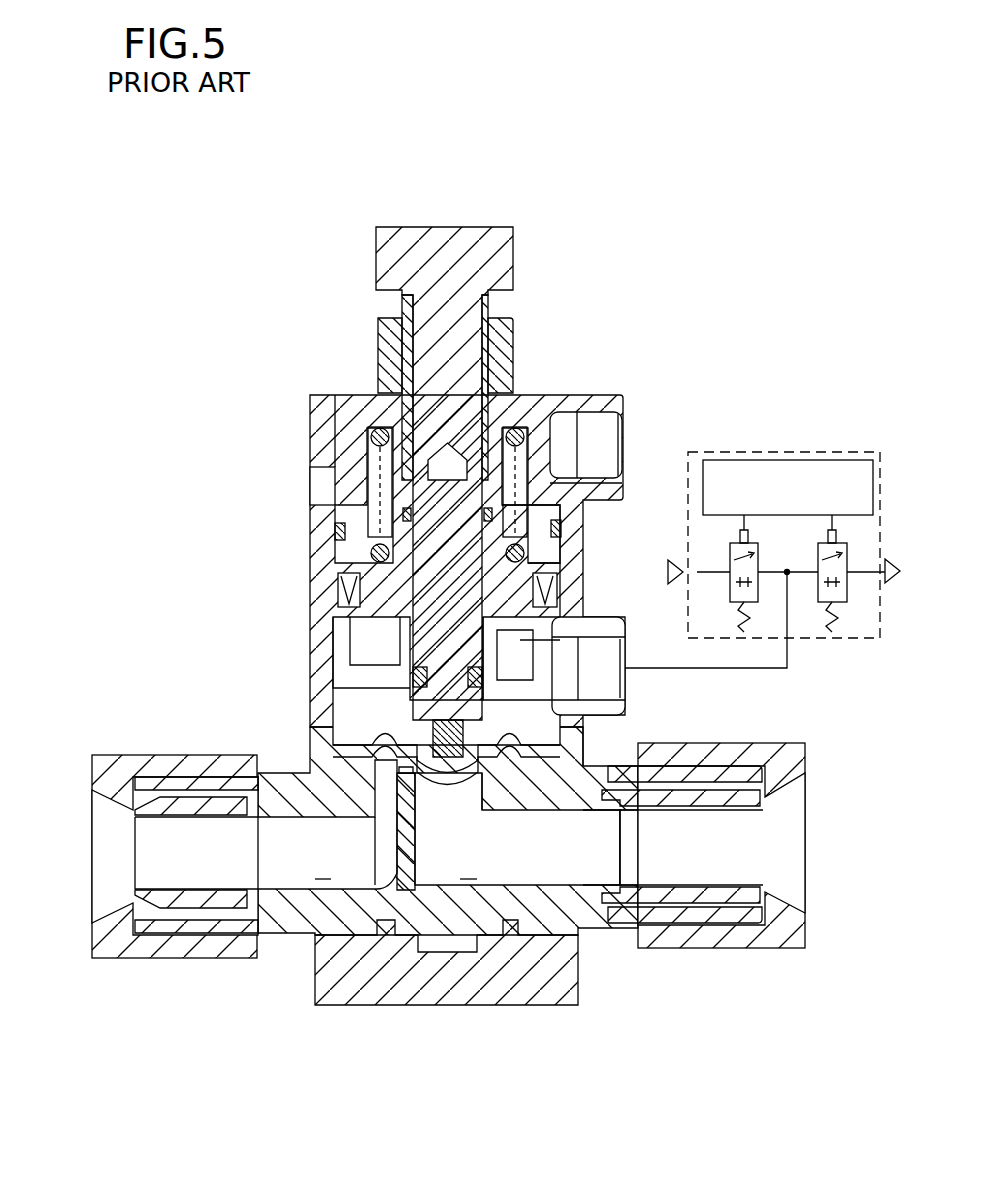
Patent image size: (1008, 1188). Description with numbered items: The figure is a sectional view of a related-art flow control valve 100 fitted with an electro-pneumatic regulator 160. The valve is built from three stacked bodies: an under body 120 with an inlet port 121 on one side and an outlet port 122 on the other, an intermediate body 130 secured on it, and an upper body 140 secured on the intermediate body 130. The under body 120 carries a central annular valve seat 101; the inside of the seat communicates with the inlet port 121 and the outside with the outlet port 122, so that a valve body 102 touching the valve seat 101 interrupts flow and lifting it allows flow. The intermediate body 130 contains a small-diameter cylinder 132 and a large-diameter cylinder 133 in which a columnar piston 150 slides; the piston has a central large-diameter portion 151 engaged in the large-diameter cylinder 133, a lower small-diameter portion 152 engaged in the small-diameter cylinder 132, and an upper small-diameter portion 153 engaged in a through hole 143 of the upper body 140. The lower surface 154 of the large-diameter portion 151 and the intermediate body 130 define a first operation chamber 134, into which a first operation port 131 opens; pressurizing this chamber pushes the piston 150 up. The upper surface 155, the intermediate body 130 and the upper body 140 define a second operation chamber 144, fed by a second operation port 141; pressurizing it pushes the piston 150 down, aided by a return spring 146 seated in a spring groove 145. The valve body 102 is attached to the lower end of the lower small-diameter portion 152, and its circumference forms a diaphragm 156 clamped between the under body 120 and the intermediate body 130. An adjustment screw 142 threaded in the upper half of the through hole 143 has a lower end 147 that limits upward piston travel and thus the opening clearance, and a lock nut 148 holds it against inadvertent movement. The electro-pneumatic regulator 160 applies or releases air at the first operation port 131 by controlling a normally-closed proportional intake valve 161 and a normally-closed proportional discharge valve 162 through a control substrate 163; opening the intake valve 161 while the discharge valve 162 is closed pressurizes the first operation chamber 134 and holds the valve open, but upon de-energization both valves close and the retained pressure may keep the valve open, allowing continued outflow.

The flow control valve 100 is at (650, 356).
The valve seat 101 is at (418, 773).
The valve body 102 is at (480, 773).
The under body 120 is at (303, 920).
The inlet port 121 is at (747, 852).
The outlet port 122 is at (155, 853).
The intermediate body 130 is at (572, 617).
The first operation port 131 is at (600, 687).
The small-diameter cylinder 132 is at (420, 692).
The large-diameter cylinder 133 is at (553, 540).
The first operation chamber 134 is at (583, 725).
The upper body 140 is at (540, 405).
The second operation port 141 is at (590, 442).
The adjustment screw 142 is at (492, 225).
The through hole 143 is at (317, 518).
The second operation chamber 144 is at (553, 555).
The spring groove 145 is at (368, 445).
The return spring 146 is at (372, 430).
The lower end 147 is at (418, 473).
The lock nut 148 is at (510, 318).
The piston 150 is at (343, 600).
The large-diameter portion 151 is at (563, 583).
The lower small-diameter portion 152 is at (413, 710).
The upper small-diameter portion 153 is at (420, 500).
The lower surface 154 is at (555, 653).
The upper surface 155 is at (360, 557).
The diaphragm 156 is at (380, 735).
The electro-pneumatic regulator 160 is at (752, 452).
The normally-closed proportional intake valve 161 is at (728, 568).
The normally-closed proportional discharge valve 162 is at (815, 568).
The control substrate 163 is at (770, 460).